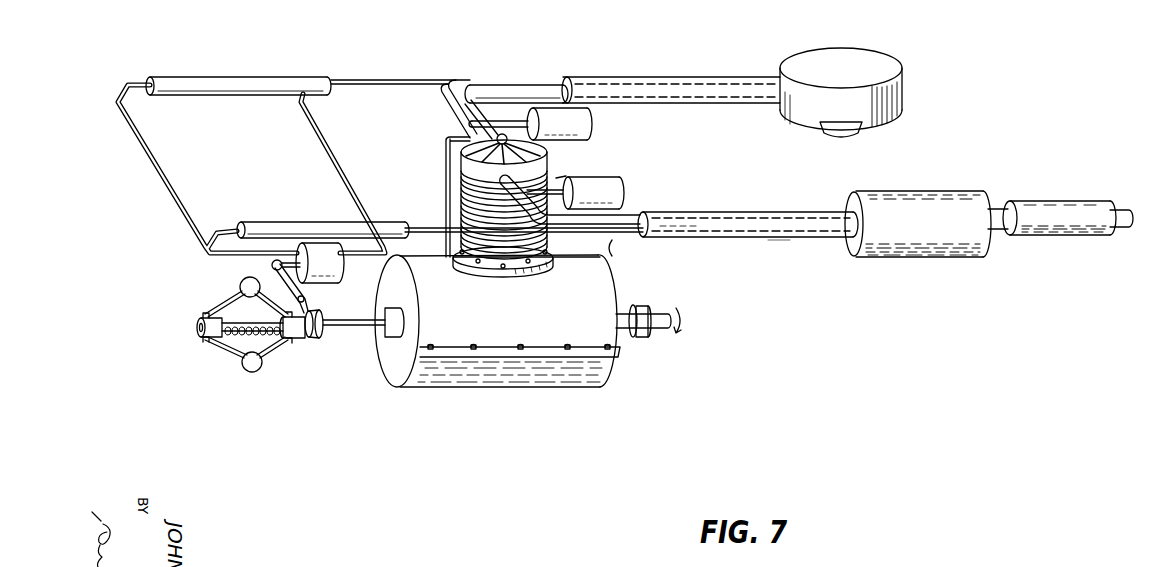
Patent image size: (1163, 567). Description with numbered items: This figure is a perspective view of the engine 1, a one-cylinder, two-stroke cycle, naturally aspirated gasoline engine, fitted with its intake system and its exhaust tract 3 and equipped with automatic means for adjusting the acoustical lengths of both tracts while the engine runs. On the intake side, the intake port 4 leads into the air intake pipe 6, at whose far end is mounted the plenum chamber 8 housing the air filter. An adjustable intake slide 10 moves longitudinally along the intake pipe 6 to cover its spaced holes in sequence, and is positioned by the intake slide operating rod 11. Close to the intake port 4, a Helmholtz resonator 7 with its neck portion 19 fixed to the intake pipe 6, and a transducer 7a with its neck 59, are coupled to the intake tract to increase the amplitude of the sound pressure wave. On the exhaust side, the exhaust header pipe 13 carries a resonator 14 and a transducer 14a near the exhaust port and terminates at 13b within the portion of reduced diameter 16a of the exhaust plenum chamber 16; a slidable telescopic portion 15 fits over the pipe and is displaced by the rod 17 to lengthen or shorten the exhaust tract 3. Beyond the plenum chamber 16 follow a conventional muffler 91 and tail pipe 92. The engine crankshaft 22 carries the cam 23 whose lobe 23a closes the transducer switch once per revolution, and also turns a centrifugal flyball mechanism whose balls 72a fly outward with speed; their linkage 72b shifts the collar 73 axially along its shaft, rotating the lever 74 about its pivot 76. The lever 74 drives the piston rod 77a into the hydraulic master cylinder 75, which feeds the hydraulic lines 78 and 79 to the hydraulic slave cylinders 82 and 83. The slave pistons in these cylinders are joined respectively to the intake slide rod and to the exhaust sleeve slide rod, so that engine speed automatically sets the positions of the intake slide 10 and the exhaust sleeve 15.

The engine 1 is at (386, 382).
The exhaust tract 3 is at (612, 240).
The intake port 4 is at (461, 176).
The air intake pipe 6 is at (526, 84).
The resonator 7 is at (587, 124).
The transducer 7a is at (591, 124).
The plenum chamber 8 is at (900, 93).
The intake slide 10 is at (615, 76).
The intake slide operating rod 11 is at (446, 78).
The exhaust header pipe 13 is at (470, 192).
The exhaust pipe termination 13b is at (696, 213).
The resonator 14 is at (629, 192).
The transducer 14a is at (623, 190).
The telescopic portion 15 is at (730, 243).
The plenum chamber 16 is at (867, 217).
The portion of reduced diameter 16a is at (768, 240).
The rod 17 is at (441, 220).
The neck portion 19 is at (470, 123).
The crankshaft 22 is at (361, 329).
The cam 23 is at (648, 321).
The lobe 23a is at (650, 306).
The neck 59 is at (558, 178).
The balls 72a is at (240, 287).
The threaded rod 72b is at (250, 303).
The collar 73 is at (319, 341).
The lever 74 is at (271, 268).
The hydraulic master cylinder 75 is at (332, 285).
The pivot 76 is at (296, 296).
The piston rod 77a is at (304, 243).
The hydraulic line 78 is at (354, 178).
The hydraulic line 79 is at (408, 238).
The hydraulic slave cylinder 82 is at (280, 76).
The hydraulic slave cylinder 83 is at (290, 222).
The muffler 91 is at (1081, 200).
The tail pipe 92 is at (1125, 208).